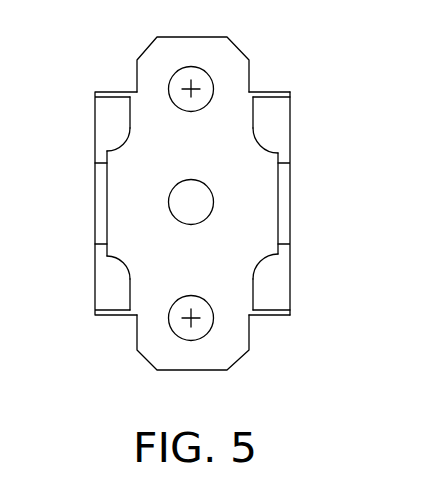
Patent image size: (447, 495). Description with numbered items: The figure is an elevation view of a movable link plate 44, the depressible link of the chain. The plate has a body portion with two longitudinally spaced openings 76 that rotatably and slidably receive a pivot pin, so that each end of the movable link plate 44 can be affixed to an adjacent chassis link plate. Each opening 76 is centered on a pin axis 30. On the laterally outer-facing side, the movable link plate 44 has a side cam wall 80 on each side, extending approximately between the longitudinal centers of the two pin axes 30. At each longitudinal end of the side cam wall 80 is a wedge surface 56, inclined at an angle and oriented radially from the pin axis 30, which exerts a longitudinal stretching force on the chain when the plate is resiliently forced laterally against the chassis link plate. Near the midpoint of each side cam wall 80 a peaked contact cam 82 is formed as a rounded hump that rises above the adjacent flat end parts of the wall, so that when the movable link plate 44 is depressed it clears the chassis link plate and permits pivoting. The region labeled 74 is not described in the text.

The pin axis 30 is at (191, 89).
The movable link plate 44 is at (242, 258).
The wedge surface 56 is at (113, 91).
The plate face 74 is at (233, 150).
The spaced openings 76 is at (181, 110).
The side cam wall 80 is at (108, 302).
The peaked contact cam 82 is at (285, 200).